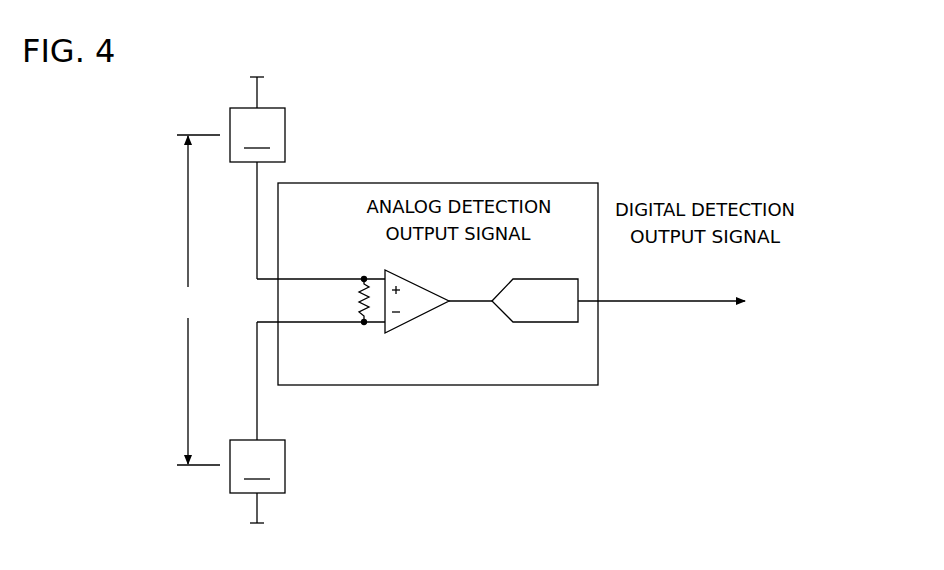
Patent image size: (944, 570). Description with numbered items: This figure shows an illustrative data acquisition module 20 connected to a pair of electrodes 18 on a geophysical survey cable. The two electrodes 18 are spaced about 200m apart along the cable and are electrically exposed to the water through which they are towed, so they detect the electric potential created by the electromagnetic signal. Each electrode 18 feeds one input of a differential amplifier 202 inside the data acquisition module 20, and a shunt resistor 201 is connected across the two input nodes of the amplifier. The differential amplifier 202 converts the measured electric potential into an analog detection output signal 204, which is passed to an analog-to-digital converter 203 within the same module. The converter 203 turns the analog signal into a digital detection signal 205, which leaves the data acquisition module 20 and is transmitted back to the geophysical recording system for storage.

The electrode 18 is at (257, 300).
The data acquisition module 20 is at (536, 180).
The electrode spacing 200m is at (193, 300).
The shunt resistor 201 is at (359, 299).
The differential amplifier 202 is at (417, 322).
The analog-to-digital converter 203 is at (547, 323).
The analog detection output signal 204 is at (465, 300).
The digital detection signal 205 is at (696, 300).